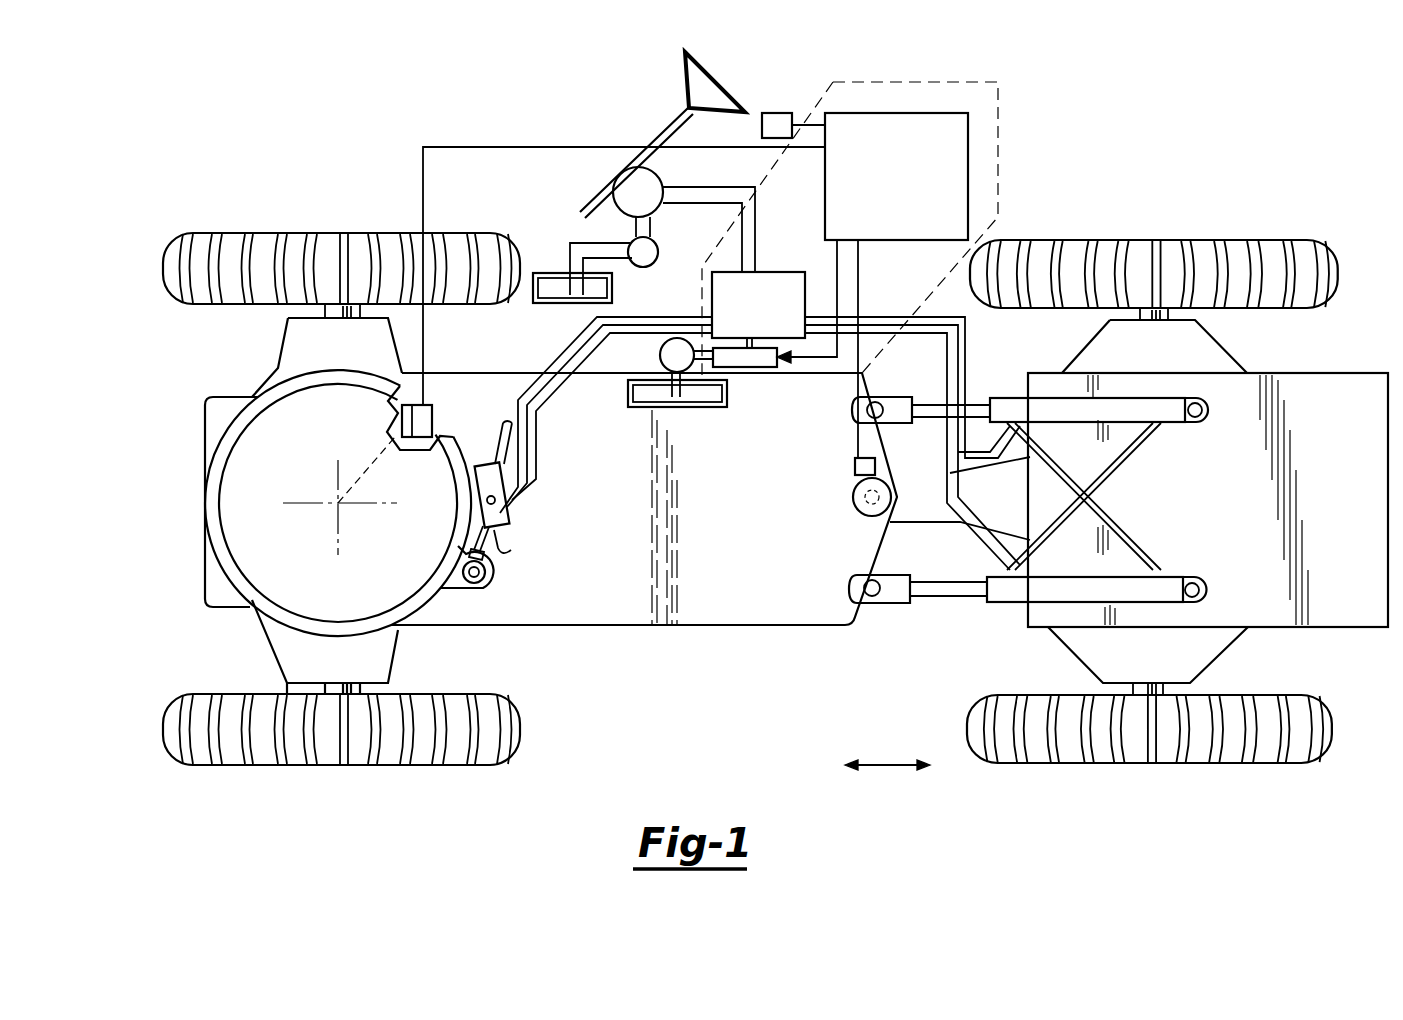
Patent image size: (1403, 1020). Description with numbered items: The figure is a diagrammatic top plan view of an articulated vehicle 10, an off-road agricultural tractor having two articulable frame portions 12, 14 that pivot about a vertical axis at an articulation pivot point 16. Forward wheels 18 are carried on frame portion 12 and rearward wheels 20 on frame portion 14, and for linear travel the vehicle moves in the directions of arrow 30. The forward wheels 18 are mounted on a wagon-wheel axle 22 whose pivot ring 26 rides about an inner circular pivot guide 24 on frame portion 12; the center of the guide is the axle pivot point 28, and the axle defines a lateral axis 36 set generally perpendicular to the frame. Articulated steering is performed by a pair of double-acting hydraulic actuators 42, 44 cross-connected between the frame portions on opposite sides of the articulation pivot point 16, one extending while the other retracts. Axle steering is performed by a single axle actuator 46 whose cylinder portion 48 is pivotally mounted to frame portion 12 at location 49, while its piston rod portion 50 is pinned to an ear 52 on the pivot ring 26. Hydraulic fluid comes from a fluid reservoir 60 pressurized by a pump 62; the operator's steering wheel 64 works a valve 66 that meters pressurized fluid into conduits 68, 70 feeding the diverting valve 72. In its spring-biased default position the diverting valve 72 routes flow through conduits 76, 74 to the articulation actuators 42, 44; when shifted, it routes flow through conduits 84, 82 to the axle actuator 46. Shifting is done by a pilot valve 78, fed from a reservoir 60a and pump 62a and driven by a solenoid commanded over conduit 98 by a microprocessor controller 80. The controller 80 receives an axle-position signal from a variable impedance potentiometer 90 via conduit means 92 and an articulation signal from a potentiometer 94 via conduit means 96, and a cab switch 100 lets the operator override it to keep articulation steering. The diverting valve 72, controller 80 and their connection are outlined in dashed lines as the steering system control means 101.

The articulated vehicle 10 is at (818, 690).
The frame portion 12 is at (663, 627).
The frame portion 14 is at (1330, 627).
The articulation pivot point 16 is at (855, 507).
The forward wheels 18 is at (447, 305).
The rearward wheels 20 is at (1293, 302).
The wagon-wheel axle 22 is at (293, 344).
The inner circular pivot guide 24 is at (303, 549).
The pivot ring 26 is at (250, 600).
The axle pivot point 28 is at (333, 492).
The arrow 30 is at (885, 765).
The lateral axis 36 is at (343, 532).
The double-acting hydraulic actuator 42 is at (1170, 423).
The double-acting hydraulic actuator 44 is at (1172, 602).
The axle actuator 46 is at (500, 550).
The cylinder portion 48 is at (488, 478).
The location 49 is at (487, 500).
The piston rod portion 50 is at (480, 540).
The ear 52 is at (450, 580).
The fluid reservoir 60 is at (536, 303).
The reservoir 60a is at (628, 392).
The pump 62 is at (646, 269).
The pump 62a is at (660, 355).
The steering wheel 64 is at (660, 130).
The valve 66 is at (652, 178).
The conduit 68 is at (677, 207).
The conduit 70 is at (755, 187).
The diverting valve 72 is at (768, 263).
The conduit 74 is at (947, 380).
The conduit 76 is at (968, 341).
The pilot valve 78 is at (762, 370).
The microprocessor controller 80 is at (870, 113).
The conduit 82 is at (539, 423).
The conduit 84 is at (528, 397).
The variable impedance potentiometer 90 is at (443, 419).
The conduit means 92 is at (530, 135).
The variable impedance potentiometer 94 is at (855, 474).
The conduit means 96 is at (862, 281).
The conduit 98 is at (836, 300).
The switch 100 is at (800, 76).
The steering system control means 101 is at (1000, 130).